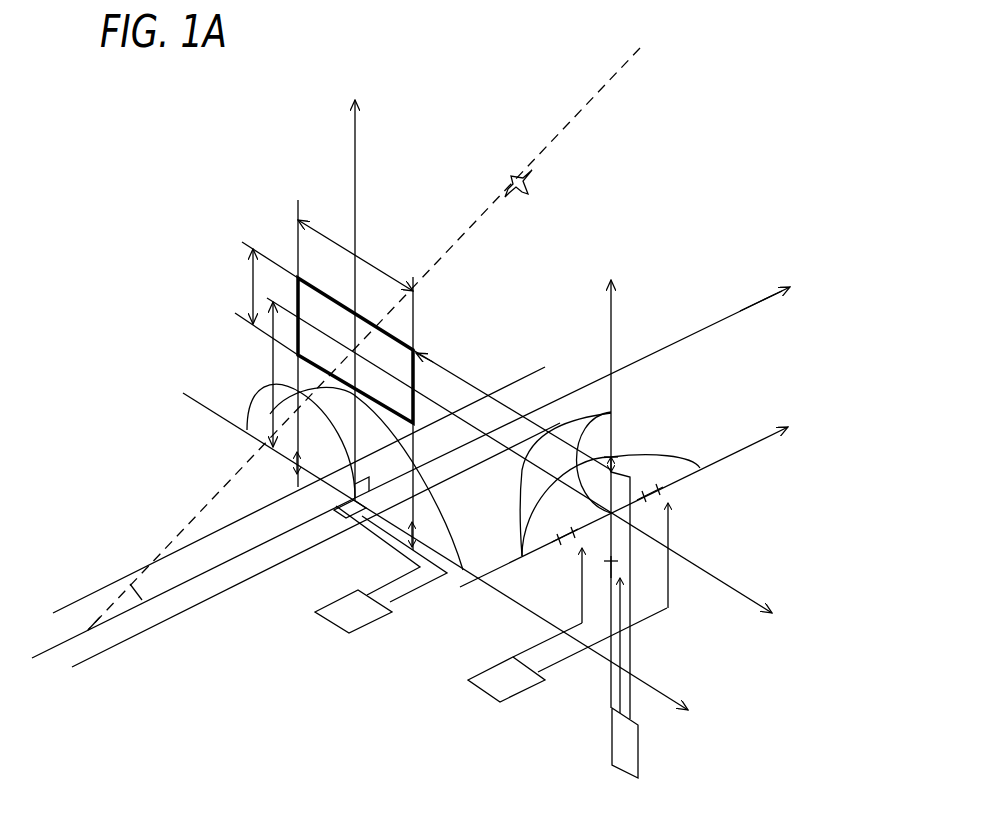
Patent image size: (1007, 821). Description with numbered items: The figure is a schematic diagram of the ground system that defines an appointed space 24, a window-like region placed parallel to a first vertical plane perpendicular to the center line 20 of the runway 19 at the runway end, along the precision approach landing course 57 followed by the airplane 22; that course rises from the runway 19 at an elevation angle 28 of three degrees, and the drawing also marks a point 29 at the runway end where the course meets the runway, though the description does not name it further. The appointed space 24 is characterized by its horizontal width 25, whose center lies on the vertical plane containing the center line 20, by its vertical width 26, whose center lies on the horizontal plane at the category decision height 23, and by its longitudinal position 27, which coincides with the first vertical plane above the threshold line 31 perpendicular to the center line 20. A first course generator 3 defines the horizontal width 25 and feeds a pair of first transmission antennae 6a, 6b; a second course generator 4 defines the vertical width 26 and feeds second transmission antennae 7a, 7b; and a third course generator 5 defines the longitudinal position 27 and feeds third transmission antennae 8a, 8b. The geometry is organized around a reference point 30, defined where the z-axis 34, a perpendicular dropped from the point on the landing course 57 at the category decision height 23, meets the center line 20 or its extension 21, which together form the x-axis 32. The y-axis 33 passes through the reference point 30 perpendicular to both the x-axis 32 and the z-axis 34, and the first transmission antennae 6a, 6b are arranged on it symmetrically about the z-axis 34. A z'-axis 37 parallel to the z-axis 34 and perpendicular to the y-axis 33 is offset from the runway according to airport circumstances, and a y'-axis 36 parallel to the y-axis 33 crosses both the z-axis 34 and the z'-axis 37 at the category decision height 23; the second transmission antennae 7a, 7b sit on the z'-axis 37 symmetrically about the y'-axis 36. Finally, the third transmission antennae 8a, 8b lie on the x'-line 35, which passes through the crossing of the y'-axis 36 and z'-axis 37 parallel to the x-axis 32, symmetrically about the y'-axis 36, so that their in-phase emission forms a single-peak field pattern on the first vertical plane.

The first course generator 3 is at (347, 633).
The second course generator 4 is at (638, 742).
The third course generator 5 is at (479, 701).
The first transmission antenna 6a is at (295, 463).
The first transmission antenna 6b is at (415, 534).
The second transmission antenna 7a is at (618, 564).
The second transmission antenna 7b is at (531, 411).
The third transmission antenna 8a is at (566, 538).
The third transmission antenna 8b is at (668, 497).
The runway 19 is at (120, 580).
The center line 20 is at (220, 567).
The extension of the center line 21 is at (700, 331).
The airplane 22 is at (538, 184).
The category decision height 23 is at (270, 372).
The appointed space 24 is at (322, 284).
The horizontal width 25 is at (370, 262).
The vertical width 26 is at (250, 287).
The longitudinal position 27 is at (433, 362).
The elevation angle 28 is at (136, 600).
The runway threshold 29 is at (84, 629).
The reference point 30 is at (347, 515).
The threshold line 31 is at (350, 491).
The x-axis 32 is at (764, 303).
The y-axis 33 is at (655, 688).
The z-axis 34 is at (357, 128).
The x'-line 35 is at (760, 443).
The y'-axis 36 is at (740, 594).
The z'-axis 37 is at (609, 302).
The precision approach landing course 57 is at (606, 88).